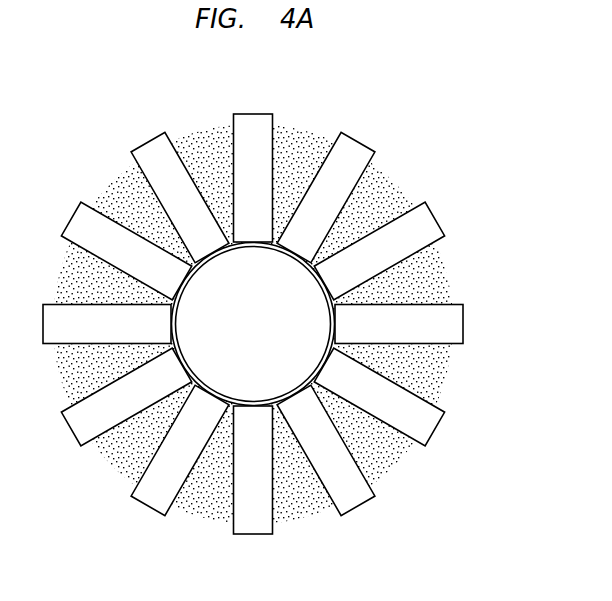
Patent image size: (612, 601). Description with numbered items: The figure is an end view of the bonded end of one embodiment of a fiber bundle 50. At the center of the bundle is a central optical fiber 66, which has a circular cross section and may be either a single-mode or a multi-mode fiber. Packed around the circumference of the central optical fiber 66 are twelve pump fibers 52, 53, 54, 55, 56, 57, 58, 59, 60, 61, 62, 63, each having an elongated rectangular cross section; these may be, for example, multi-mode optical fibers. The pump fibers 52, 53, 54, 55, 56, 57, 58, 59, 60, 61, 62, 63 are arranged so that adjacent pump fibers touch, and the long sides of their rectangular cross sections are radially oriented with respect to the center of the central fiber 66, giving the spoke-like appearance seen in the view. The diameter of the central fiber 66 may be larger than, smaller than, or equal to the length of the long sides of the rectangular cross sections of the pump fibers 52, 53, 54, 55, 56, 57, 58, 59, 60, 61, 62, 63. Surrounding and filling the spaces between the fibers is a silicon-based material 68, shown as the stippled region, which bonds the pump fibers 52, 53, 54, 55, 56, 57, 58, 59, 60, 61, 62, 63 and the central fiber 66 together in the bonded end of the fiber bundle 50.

The fiber bundle 50 is at (278, 311).
The pump fiber 52 is at (241, 178).
The pump fiber 53 is at (320, 199).
The pump fiber 54 is at (378, 257).
The pump fiber 55 is at (399, 336).
The pump fiber 56 is at (378, 415).
The pump fiber 57 is at (320, 473).
The pump fiber 58 is at (241, 494).
The pump fiber 59 is at (162, 473).
The pump fiber 60 is at (104, 415).
The pump fiber 61 is at (83, 336).
The pump fiber 62 is at (104, 257).
The pump fiber 63 is at (162, 199).
The central optical fiber 66 is at (241, 336).
The silicon-based material 68 is at (203, 134).